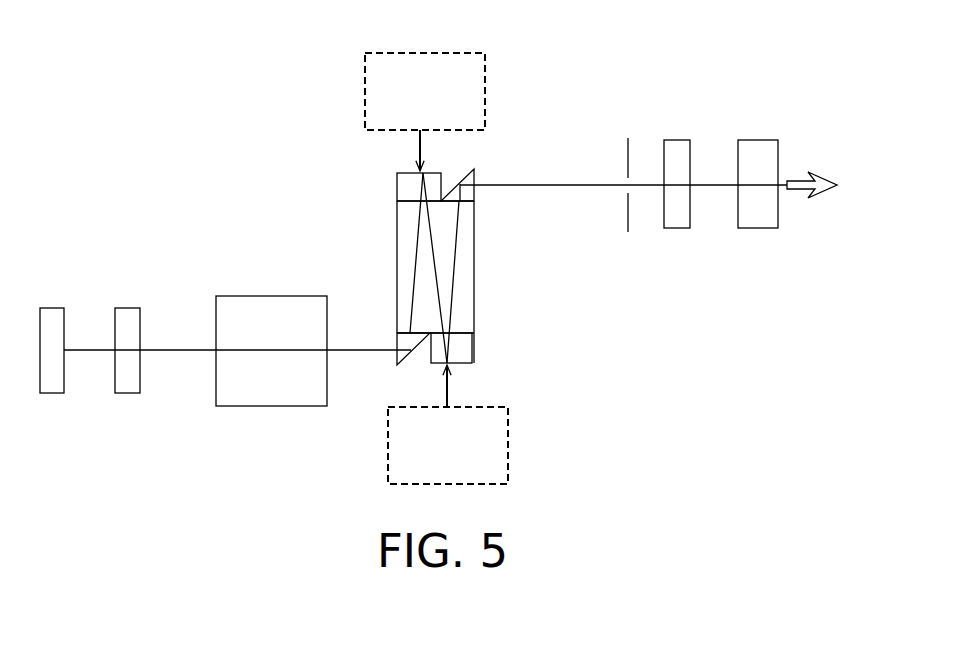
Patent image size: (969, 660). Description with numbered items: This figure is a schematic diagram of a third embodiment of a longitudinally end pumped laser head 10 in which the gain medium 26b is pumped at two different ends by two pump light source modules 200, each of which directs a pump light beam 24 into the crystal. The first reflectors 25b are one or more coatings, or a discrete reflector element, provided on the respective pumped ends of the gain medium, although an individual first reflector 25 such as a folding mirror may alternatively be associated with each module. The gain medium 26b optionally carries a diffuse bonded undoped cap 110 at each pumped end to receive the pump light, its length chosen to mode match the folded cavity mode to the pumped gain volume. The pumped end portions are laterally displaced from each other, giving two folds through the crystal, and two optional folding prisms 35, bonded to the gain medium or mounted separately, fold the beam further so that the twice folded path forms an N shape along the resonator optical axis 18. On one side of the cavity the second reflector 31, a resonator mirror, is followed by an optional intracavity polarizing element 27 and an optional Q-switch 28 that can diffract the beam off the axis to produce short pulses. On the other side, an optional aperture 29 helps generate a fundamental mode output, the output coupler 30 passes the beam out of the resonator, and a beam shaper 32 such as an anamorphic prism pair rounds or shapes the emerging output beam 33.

The laser head 10 is at (438, 268).
The resonator optical axis 18 is at (237, 300).
The pump light beam 24 is at (527, 389).
The first reflector 25 is at (365, 168).
The first reflectors 25b is at (517, 364).
The gain medium 26b is at (371, 268).
The intracavity polarizing element 27 is at (151, 383).
The Q-switch 28 is at (274, 382).
The aperture 29 is at (595, 216).
The output coupler 30 is at (660, 217).
The second reflector 31 is at (76, 383).
The beam shaper 32 is at (745, 217).
The output beam 33 is at (789, 254).
The folding prisms 35 is at (438, 235).
The undoped cap 110 is at (623, 277).
The pump light source modules 200 is at (430, 268).